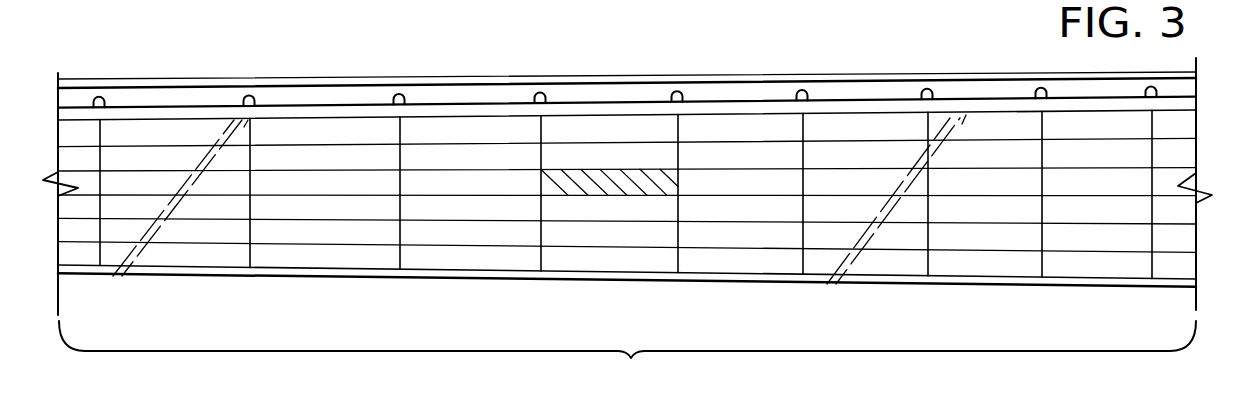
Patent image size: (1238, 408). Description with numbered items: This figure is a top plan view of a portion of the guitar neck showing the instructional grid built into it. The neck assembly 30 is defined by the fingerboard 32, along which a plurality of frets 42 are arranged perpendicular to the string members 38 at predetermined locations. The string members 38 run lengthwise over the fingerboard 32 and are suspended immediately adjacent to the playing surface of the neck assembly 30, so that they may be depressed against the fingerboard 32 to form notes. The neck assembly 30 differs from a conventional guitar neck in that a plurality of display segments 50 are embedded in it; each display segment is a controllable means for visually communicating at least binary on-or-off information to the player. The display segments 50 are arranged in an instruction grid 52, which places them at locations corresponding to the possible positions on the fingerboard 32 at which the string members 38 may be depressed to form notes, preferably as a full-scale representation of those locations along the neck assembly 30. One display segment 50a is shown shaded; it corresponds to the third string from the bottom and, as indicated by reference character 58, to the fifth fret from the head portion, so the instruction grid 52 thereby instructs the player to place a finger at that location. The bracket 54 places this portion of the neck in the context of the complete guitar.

The neck assembly 30 is at (758, 108).
The fingerboard 32 is at (598, 101).
The string members 38 is at (498, 81).
The frets 42 is at (806, 97).
The display segments 50 is at (558, 260).
The shaded display segment 50a is at (639, 196).
The instruction grid 52 is at (311, 292).
The bracket 54 is at (627, 356).
The reference character for fifth fret 58 is at (690, 92).